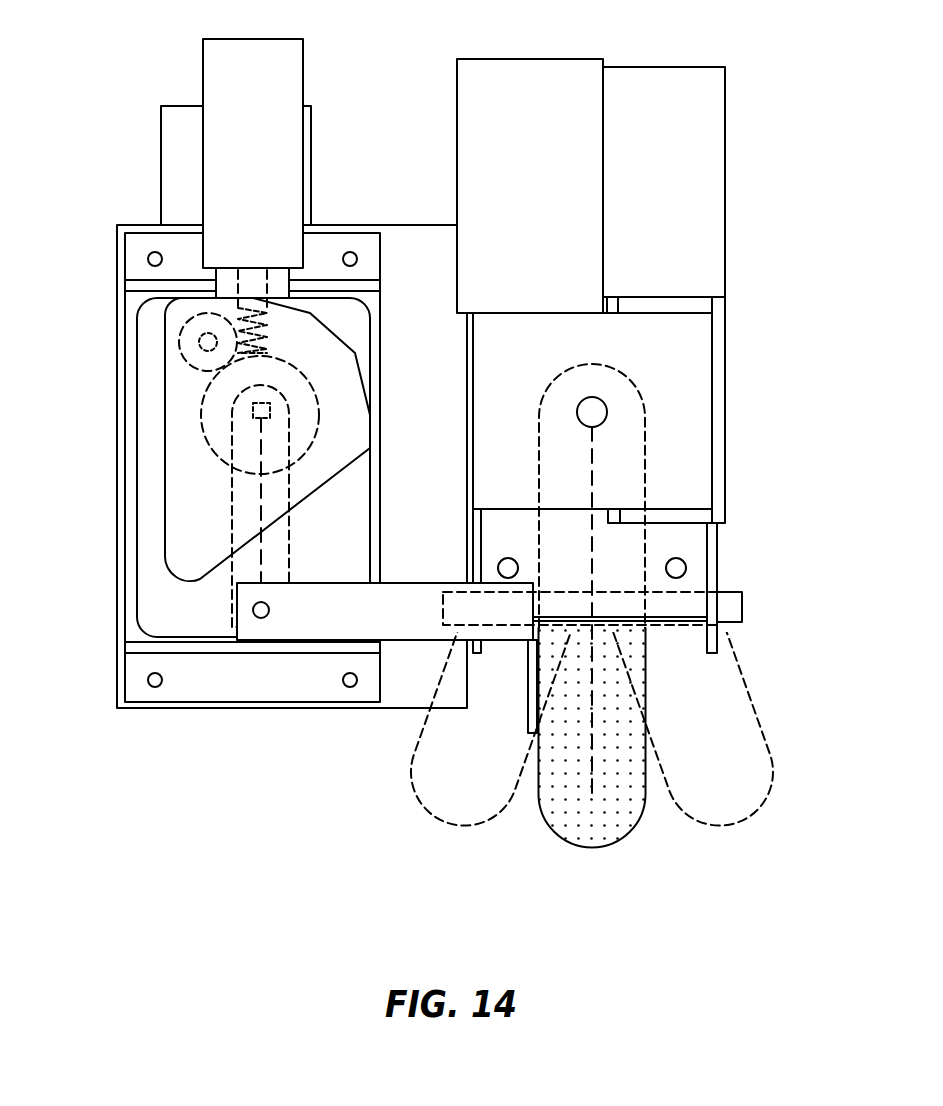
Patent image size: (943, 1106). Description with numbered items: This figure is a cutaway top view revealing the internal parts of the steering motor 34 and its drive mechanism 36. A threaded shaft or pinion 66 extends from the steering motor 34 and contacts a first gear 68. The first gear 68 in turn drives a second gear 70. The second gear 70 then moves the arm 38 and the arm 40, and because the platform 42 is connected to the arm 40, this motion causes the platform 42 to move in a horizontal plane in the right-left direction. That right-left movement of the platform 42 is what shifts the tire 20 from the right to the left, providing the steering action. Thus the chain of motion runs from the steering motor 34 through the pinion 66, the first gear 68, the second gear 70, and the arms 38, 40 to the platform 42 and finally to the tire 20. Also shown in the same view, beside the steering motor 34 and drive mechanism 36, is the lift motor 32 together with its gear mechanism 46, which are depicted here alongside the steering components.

The tire 20 is at (592, 833).
The lift motor 32 is at (498, 131).
The steering motor 34 is at (283, 78).
The drive mechanism 36 is at (173, 390).
The arm 38 is at (237, 572).
The arm 40 is at (417, 617).
The platform 42 is at (688, 548).
The gear mechanism 46 is at (688, 380).
The threaded shaft or pinion 66 is at (263, 330).
The first gear 68 is at (167, 342).
The second gear 70 is at (210, 433).